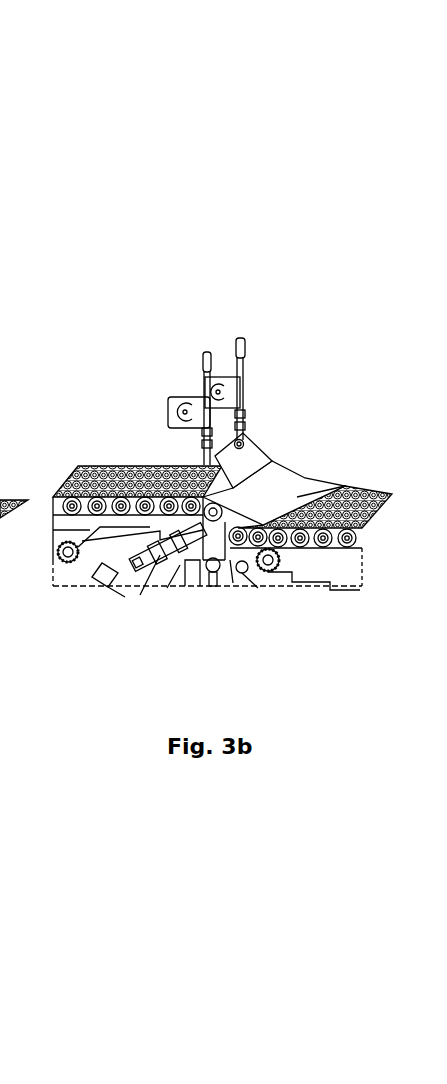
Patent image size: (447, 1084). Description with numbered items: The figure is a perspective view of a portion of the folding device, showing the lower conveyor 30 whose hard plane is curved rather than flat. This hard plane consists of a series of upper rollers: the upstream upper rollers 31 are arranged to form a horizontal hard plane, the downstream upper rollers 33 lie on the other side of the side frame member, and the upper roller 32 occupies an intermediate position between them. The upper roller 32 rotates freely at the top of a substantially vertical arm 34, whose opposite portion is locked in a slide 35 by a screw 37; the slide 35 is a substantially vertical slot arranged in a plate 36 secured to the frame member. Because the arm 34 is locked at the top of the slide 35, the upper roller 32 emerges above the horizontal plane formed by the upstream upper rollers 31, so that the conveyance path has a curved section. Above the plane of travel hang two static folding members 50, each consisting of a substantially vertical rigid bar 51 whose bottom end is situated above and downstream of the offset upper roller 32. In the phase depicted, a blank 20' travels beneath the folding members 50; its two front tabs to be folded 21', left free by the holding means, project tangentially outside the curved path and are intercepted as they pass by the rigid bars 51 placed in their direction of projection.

The lower conveyor 30 is at (389, 624).
The upstream upper rollers 31 is at (300, 548).
The upper roller 32 is at (200, 470).
The downstream upper rollers 33 is at (125, 500).
The arm 34 is at (213, 537).
The slide 35 is at (213, 586).
The plate 36 is at (200, 576).
The screw 37 is at (218, 573).
The static folding member 50 is at (249, 309).
The rigid bar 51 is at (202, 382).
The blank 20' is at (311, 475).
The front tabs to be folded 21' is at (284, 432).